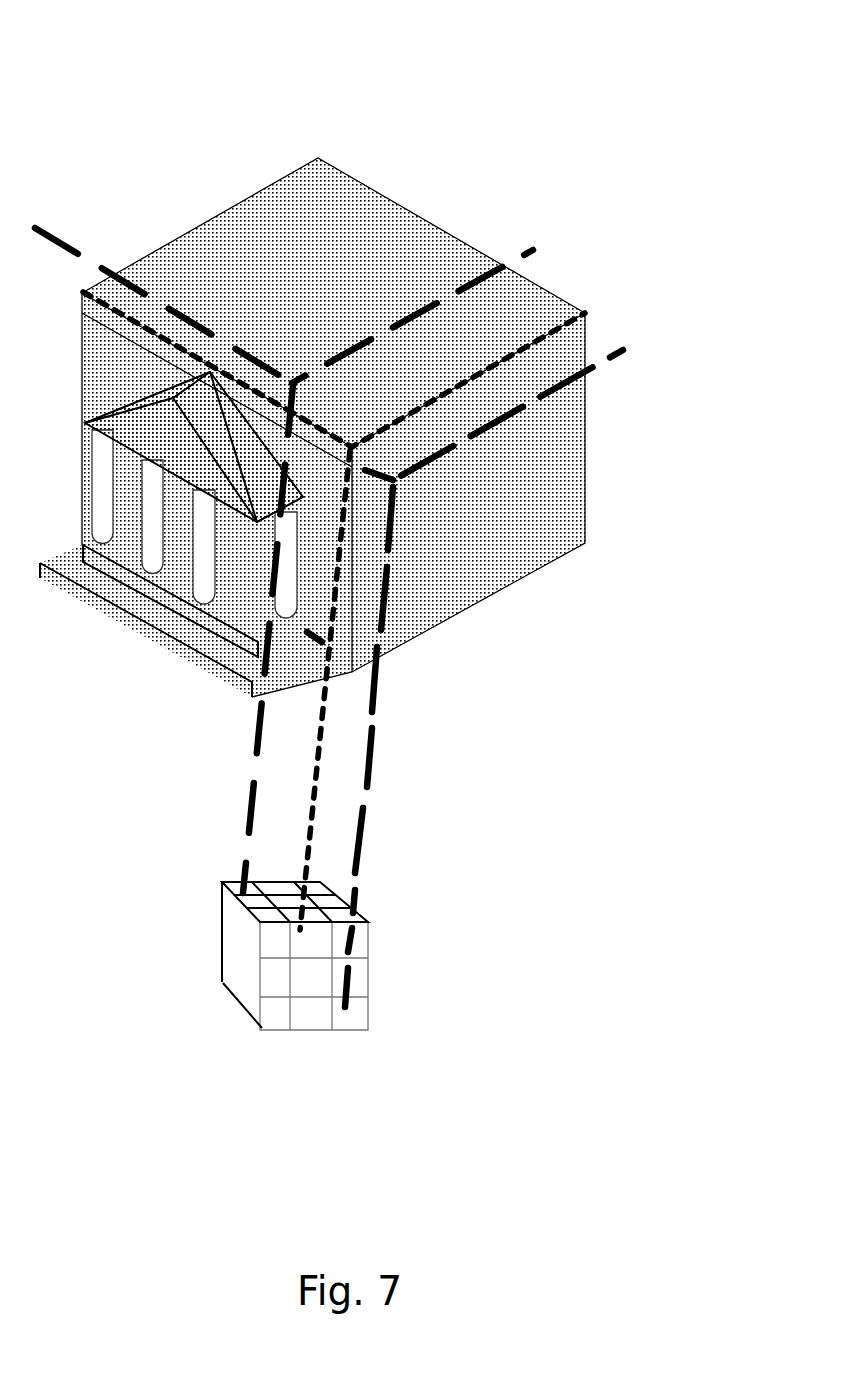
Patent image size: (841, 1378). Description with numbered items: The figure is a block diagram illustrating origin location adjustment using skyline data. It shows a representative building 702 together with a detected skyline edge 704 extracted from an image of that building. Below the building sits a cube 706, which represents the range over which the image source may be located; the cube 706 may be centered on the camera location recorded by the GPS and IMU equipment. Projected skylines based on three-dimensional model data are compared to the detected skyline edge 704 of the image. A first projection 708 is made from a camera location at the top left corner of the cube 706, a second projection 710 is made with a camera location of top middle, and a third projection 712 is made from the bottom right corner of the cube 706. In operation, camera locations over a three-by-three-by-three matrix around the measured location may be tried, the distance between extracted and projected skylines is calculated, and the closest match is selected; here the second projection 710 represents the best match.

The building 702 is at (362, 186).
The detected skyline edge 704 is at (560, 320).
The cube 706 is at (232, 945).
The first projection 708 is at (245, 822).
The second projection 710 is at (310, 827).
The third projection 712 is at (367, 788).